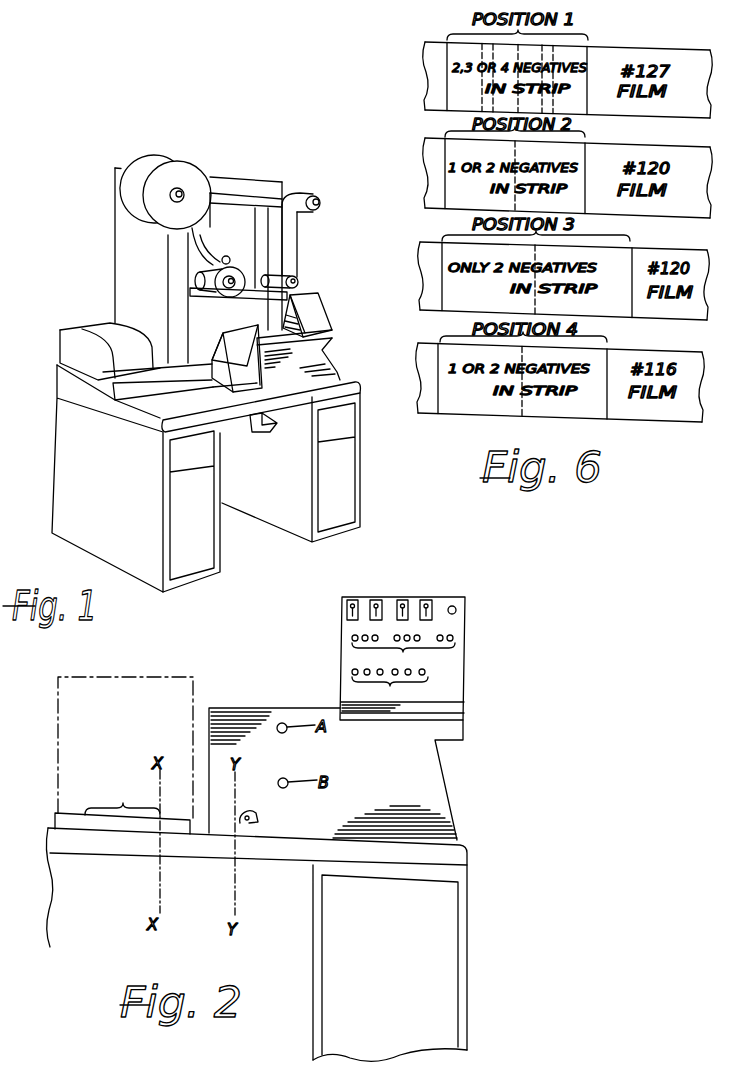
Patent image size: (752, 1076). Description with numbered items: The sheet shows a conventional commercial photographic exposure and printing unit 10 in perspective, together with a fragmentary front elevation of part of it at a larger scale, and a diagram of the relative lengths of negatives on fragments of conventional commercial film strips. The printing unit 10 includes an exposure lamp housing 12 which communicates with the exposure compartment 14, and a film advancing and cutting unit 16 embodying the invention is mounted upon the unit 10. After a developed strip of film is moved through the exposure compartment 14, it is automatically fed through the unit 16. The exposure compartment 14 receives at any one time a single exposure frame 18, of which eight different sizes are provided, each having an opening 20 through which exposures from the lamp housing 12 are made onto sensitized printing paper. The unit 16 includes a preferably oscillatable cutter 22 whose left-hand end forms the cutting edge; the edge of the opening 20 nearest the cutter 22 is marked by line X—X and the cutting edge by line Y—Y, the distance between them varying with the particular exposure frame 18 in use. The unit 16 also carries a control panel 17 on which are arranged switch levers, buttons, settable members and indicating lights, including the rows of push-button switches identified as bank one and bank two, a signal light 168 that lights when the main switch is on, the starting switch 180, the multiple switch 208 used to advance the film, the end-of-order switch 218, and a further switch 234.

In FIG. 1, the photographic exposure and printing unit 10 is at (67, 460).
In FIG. 1, the exposure lamp housing 12 is at (235, 433).
In FIG. 1, the exposure compartment 14 is at (243, 372).
In FIG. 2, the exposure compartment 14 is at (62, 748).
In FIG. 1, the film advancing and cutting unit 16 is at (317, 367).
In FIG. 2, the film advancing and cutting unit 16 is at (430, 787).
In FIG. 1, the control panel 17 is at (318, 310).
In FIG. 2, the control panel 17 is at (463, 637).
In FIG. 1, the exposure frame 18 is at (252, 387).
In FIG. 2, the exposure frame 18 is at (75, 820).
In FIG. 2, the opening 20 is at (122, 800).
In FIG. 2, the cutter 22 is at (260, 808).
In FIG. 2, the signal light 168 is at (456, 609).
In FIG. 2, the starting switch 180 is at (357, 596).
In FIG. 2, the multiple switch 208 is at (427, 600).
In FIG. 2, the end-of-order switch 218 is at (405, 598).
In FIG. 2, the switch 234 is at (377, 600).